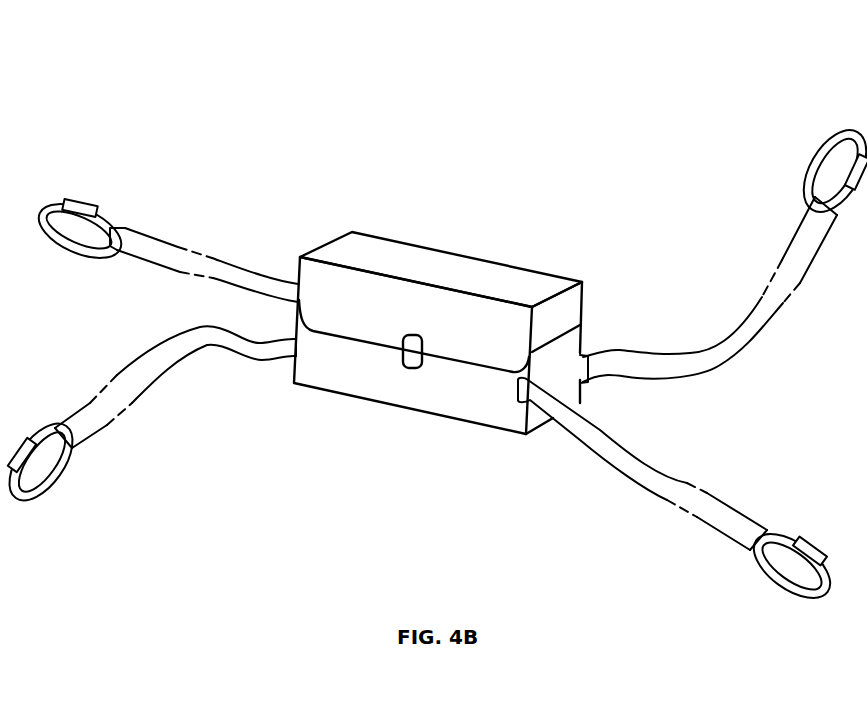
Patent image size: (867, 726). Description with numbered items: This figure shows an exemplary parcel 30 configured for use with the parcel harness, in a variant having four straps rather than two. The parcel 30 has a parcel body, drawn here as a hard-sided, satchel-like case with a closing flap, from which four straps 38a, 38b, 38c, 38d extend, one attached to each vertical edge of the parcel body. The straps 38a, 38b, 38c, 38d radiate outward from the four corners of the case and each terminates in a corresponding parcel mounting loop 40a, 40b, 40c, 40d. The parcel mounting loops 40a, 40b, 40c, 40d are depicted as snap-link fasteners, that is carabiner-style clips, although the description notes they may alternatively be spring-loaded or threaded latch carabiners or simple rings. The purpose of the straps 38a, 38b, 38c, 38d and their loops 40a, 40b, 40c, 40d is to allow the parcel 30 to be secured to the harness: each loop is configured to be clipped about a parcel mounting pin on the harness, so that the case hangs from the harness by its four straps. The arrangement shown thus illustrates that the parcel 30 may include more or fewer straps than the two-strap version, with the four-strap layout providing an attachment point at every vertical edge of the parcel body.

The parcel 30 is at (499, 168).
The strap 38a is at (637, 473).
The strap 38b is at (718, 350).
The strap 38c is at (193, 342).
The strap 38d is at (157, 237).
The parcel mounting loop 40a is at (790, 590).
The parcel mounting loop 40b is at (827, 140).
The parcel mounting loop 40c is at (57, 480).
The parcel mounting loop 40d is at (50, 208).